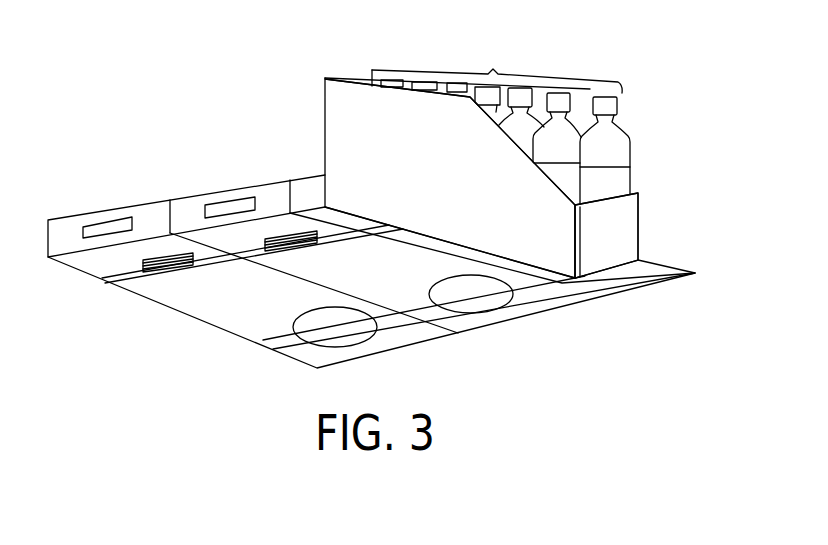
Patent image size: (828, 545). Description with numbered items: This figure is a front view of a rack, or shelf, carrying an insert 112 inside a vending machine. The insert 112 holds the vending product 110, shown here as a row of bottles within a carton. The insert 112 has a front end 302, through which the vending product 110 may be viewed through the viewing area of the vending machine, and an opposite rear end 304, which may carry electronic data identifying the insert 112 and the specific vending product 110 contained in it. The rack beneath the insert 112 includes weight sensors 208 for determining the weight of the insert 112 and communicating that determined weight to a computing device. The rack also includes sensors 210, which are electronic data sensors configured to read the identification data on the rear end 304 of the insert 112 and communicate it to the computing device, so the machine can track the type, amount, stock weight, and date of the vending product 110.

The vending product 110 is at (493, 69).
The insert 112 is at (458, 184).
The weight sensors 208 is at (192, 275).
The sensors 210 is at (108, 230).
The front end 302 is at (627, 233).
The rear end 304 is at (322, 98).